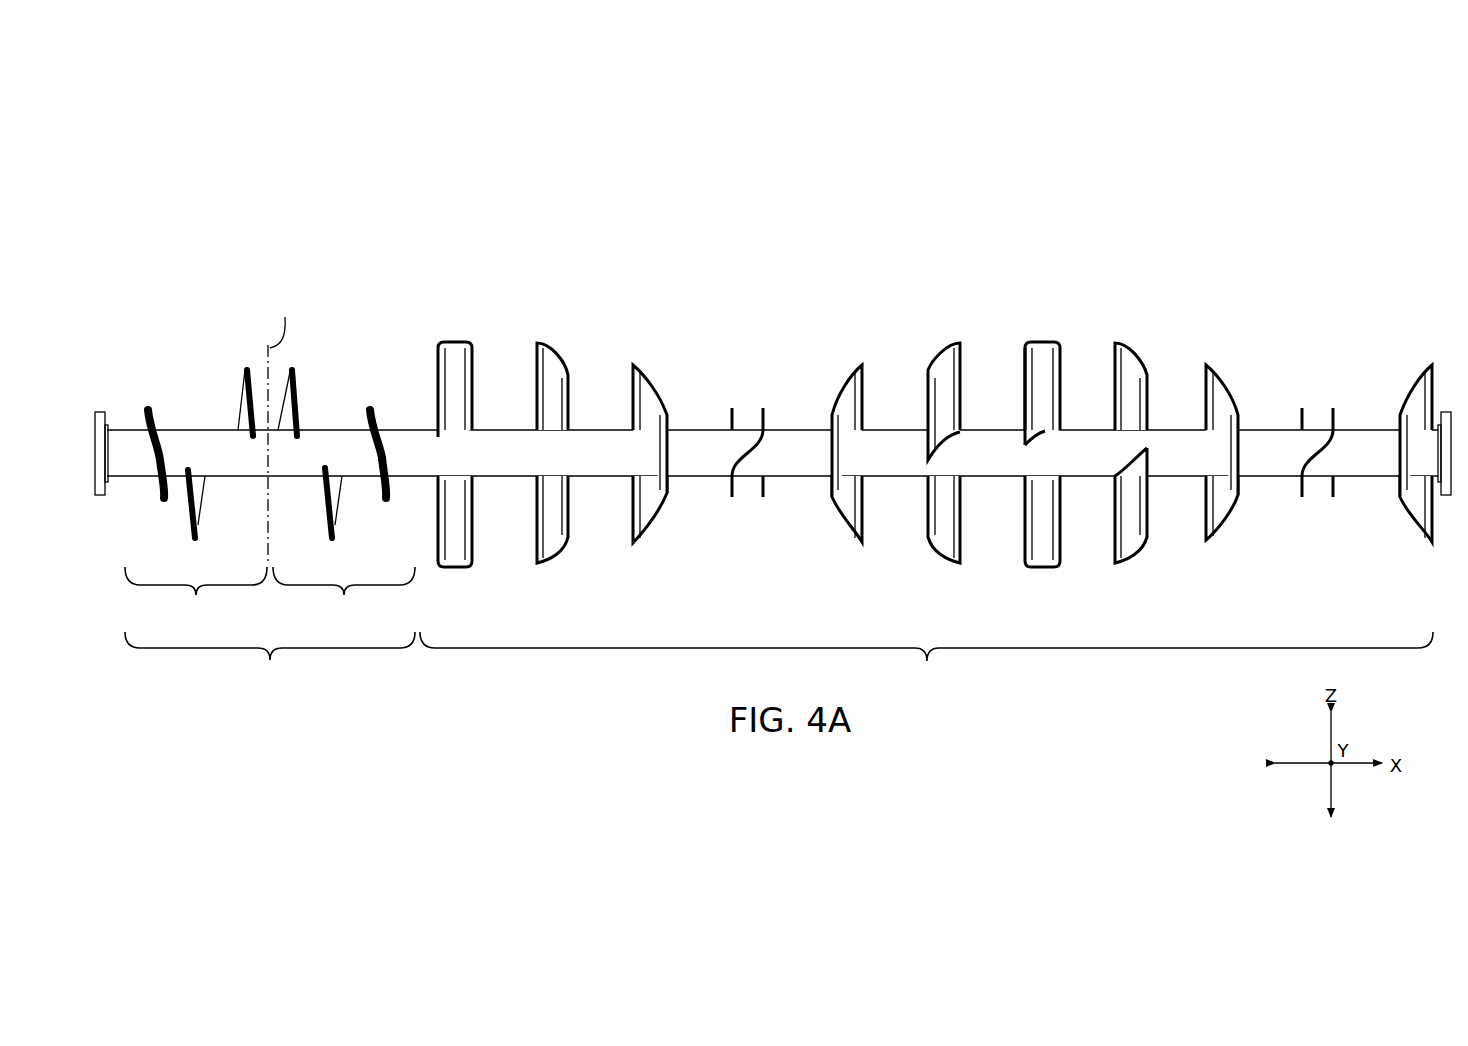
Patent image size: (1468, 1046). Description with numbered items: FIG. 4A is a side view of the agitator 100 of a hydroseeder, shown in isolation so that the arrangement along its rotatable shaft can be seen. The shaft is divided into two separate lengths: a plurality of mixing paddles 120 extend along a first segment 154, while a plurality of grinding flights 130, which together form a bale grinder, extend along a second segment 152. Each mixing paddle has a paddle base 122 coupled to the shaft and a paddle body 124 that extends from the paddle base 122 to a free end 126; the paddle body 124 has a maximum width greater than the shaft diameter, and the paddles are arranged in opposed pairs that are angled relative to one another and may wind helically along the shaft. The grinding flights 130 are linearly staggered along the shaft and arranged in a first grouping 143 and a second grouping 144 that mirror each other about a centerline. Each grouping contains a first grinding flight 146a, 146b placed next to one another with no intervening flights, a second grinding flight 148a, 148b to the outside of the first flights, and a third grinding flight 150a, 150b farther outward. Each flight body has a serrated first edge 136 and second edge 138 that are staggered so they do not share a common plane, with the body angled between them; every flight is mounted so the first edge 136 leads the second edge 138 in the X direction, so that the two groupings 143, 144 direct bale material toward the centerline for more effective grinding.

The agitator 100 is at (248, 183).
The mixing paddles 120 is at (1178, 268).
The grinding flights 130 is at (122, 346).
The paddle base 122 is at (1036, 440).
The paddle body 124 is at (1025, 360).
The free end 126 is at (1040, 340).
The first edge 136 is at (368, 415).
The second edge 138 is at (387, 497).
The first grouping 143 is at (186, 482).
The second grouping 144 is at (370, 483).
The first grinding flight 146a is at (245, 388).
The first grinding flight 146b is at (295, 370).
The second grinding flight 148a is at (195, 522).
The second grinding flight 148b is at (335, 522).
The third grinding flight 150a is at (157, 437).
The third grinding flight 150b is at (390, 473).
The second segment 152 is at (286, 491).
The first segment 154 is at (926, 489).